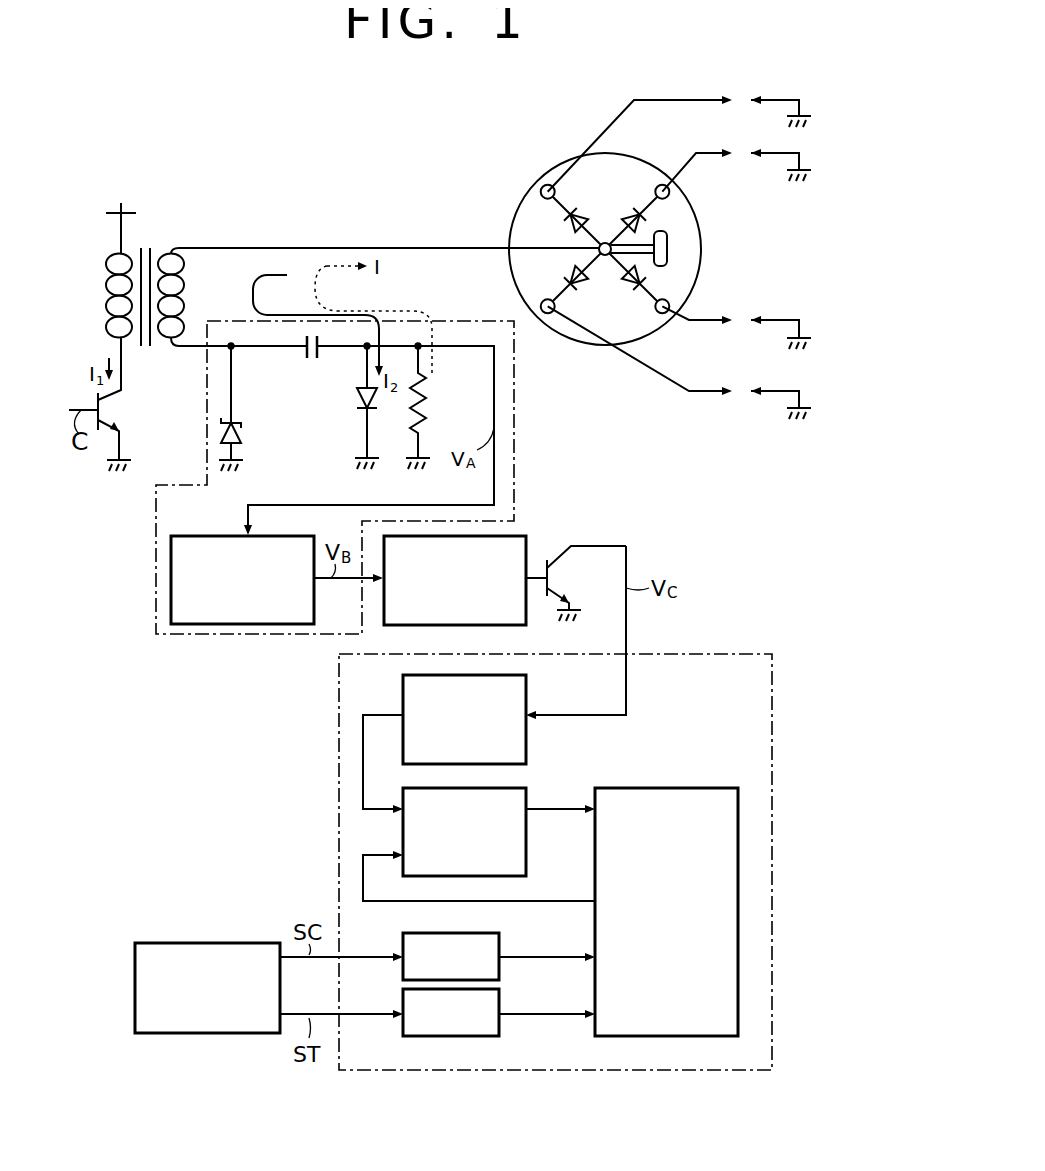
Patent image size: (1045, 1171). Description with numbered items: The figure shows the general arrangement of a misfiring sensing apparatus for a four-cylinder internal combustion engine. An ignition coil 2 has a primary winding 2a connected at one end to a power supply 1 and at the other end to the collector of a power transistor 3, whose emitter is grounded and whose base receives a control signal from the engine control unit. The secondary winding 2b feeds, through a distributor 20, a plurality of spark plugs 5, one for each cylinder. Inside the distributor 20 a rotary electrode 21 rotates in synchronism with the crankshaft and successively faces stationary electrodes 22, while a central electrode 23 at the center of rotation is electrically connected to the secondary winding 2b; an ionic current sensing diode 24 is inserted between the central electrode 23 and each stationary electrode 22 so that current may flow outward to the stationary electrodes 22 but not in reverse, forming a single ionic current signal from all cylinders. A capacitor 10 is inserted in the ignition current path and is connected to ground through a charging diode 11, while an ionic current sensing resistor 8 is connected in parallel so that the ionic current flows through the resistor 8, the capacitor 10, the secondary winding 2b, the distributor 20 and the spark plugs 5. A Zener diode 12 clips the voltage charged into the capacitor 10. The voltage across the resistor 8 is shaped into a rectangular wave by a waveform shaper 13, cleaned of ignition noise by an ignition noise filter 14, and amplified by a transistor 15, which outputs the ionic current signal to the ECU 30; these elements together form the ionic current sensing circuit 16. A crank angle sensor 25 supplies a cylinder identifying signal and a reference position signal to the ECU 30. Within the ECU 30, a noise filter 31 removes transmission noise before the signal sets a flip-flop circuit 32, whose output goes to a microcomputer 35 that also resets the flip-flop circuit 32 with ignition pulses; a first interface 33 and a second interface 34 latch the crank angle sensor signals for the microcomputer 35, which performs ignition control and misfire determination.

The power supply 1 is at (124, 214).
The ignition coil 2 is at (146, 282).
The primary winding 2a is at (107, 300).
The secondary winding 2b is at (185, 297).
The power transistor 3 is at (115, 410).
The spark plug 5 is at (742, 100).
The ionic current sensing resistor 8 is at (427, 405).
The capacitor 10 is at (308, 361).
The charging diode 11 is at (358, 398).
The Zener diode 12 is at (236, 428).
The waveform shaper 13 is at (212, 537).
The ignition noise filter 14 is at (430, 628).
The transistor 15 is at (552, 566).
The ionic current sensing circuit 16 is at (516, 405).
The distributor 20 is at (516, 208).
The rotary electrode 21 is at (703, 246).
The stationary electrode 22 is at (547, 187).
The central electrode 23 is at (598, 250).
The ionic current sensing diode 24 is at (632, 221).
The crank angle sensor 25 is at (205, 945).
The ECU 30 is at (773, 757).
The noise filter 31 is at (527, 688).
The flip-flop circuit 32 is at (497, 790).
The first interface 33 is at (500, 946).
The second interface 34 is at (500, 1012).
The microcomputer 35 is at (655, 790).